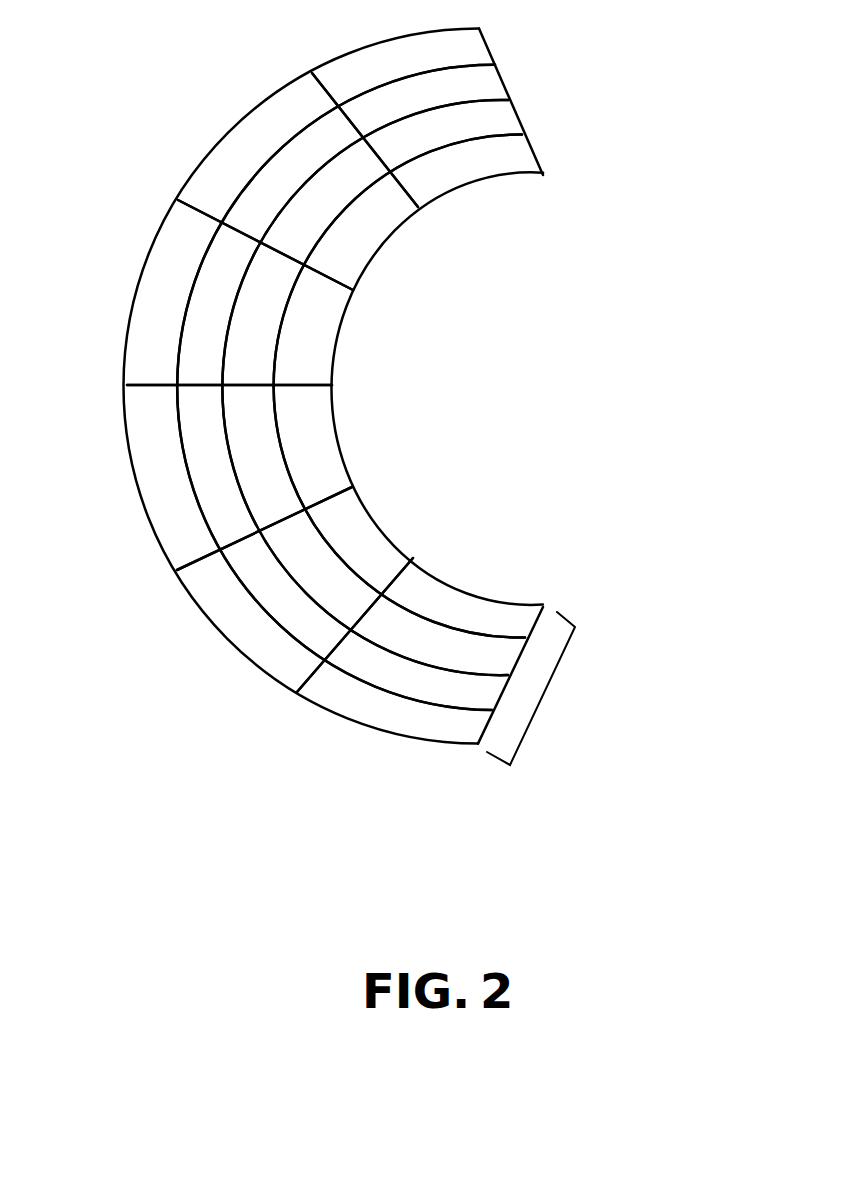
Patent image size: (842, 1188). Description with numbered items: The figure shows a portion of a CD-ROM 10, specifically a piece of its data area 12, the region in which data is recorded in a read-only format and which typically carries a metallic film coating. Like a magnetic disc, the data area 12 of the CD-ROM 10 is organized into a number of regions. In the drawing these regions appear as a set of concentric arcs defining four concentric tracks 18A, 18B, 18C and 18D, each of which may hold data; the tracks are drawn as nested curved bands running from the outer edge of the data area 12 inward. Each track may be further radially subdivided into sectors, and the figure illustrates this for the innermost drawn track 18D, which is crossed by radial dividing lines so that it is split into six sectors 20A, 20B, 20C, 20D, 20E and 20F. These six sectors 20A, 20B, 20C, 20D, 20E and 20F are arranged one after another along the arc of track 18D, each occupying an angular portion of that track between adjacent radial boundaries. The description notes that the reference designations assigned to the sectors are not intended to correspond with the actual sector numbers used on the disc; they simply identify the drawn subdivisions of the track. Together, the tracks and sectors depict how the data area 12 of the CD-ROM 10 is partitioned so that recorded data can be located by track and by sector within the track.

The CD-ROM 10 is at (336, 386).
The data area 12 is at (557, 698).
The track 18A is at (473, 42).
The track 18B is at (487, 75).
The track 18C is at (508, 117).
The track 18D is at (523, 148).
The sector 20A is at (457, 182).
The sector 20B is at (372, 248).
The sector 20C is at (330, 338).
The sector 20D is at (332, 452).
The sector 20E is at (372, 533).
The sector 20F is at (457, 603).